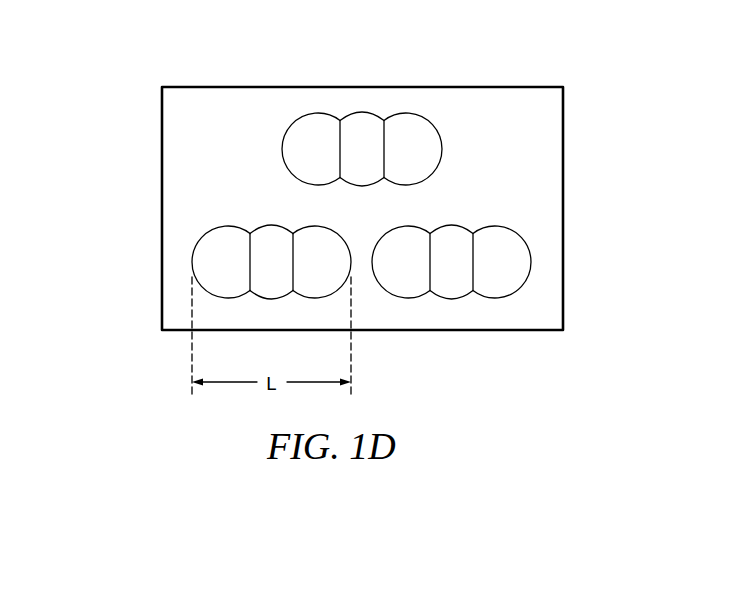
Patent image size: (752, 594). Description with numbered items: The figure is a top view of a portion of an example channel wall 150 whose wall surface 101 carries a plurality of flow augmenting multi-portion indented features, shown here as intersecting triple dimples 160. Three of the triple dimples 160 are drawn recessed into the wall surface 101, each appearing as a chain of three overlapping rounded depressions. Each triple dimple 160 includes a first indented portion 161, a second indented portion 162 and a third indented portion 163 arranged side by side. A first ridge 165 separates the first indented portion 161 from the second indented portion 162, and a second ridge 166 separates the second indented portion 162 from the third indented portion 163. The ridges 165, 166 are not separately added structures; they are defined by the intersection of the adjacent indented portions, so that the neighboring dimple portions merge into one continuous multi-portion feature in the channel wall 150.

The wall surface 101 is at (422, 315).
The channel wall 150 is at (323, 186).
The triple dimple 160 is at (337, 207).
The first indented portion 161 is at (214, 251).
The second indented portion 162 is at (273, 287).
The third indented portion 163 is at (341, 257).
The first ridge 165 is at (245, 243).
The second ridge 166 is at (297, 254).